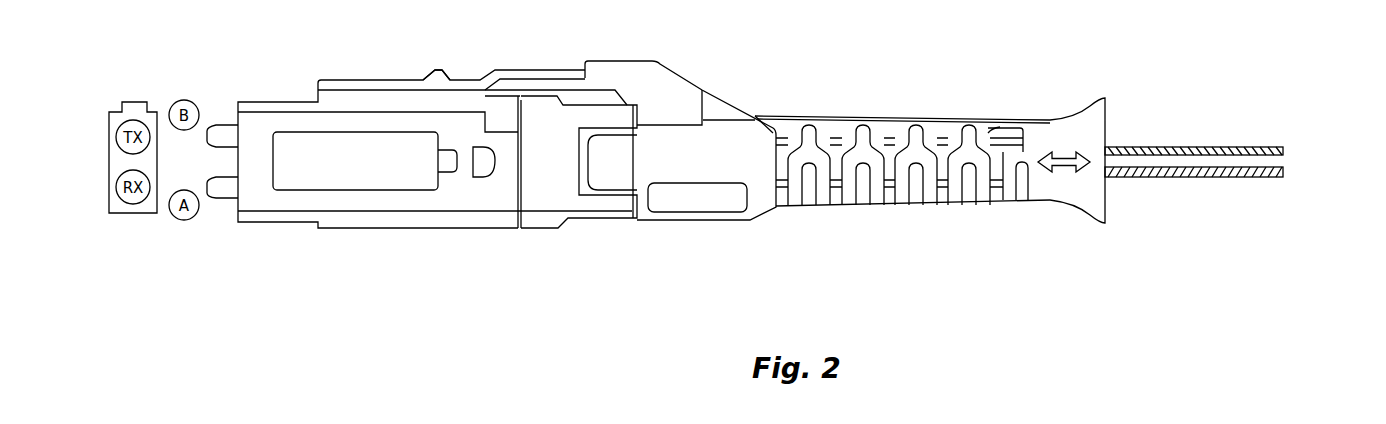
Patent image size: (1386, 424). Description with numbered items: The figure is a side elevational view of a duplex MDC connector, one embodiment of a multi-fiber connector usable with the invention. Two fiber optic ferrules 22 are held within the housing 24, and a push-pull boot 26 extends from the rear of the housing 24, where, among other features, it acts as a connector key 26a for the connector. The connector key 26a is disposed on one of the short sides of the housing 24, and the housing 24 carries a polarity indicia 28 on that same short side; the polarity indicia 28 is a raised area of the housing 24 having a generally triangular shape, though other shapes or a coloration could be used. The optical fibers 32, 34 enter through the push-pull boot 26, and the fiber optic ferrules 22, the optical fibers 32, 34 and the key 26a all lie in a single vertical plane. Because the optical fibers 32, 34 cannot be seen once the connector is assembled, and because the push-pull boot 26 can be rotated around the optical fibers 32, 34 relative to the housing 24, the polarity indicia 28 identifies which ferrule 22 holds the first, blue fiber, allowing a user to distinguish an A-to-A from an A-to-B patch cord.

The fiber optic ferrules 22 is at (225, 122).
The housing 24 is at (412, 218).
The push-pull boot 26 is at (682, 67).
The connector key 26a is at (440, 71).
The polarity indicia 28 is at (280, 100).
The optical fiber 32 is at (1197, 147).
The optical fiber 34 is at (1197, 177).